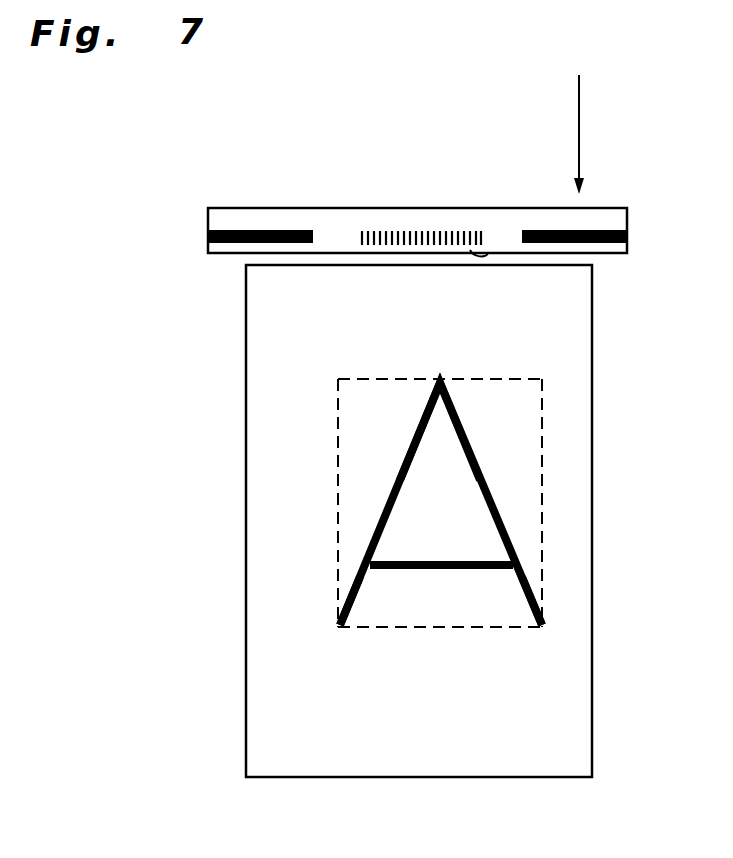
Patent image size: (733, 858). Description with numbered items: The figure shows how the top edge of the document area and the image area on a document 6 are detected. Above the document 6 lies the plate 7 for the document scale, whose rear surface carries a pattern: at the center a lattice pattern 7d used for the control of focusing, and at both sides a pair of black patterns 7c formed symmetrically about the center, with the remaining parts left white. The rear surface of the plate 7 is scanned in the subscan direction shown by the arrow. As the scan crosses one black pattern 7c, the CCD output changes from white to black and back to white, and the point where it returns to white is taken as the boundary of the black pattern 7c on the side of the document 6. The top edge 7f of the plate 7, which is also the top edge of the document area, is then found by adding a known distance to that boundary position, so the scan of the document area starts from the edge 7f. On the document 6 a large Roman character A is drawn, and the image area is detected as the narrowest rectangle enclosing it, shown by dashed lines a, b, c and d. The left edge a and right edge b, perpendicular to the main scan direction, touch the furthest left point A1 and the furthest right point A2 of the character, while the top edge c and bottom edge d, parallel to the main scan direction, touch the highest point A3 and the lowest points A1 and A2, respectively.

The document 6 is at (232, 357).
The plate 7 is at (299, 203).
The black patterns 7c is at (262, 232).
The lattice pattern 7d is at (410, 228).
The top edge of the plate 7f is at (470, 250).
The dashed line (left edge) a is at (330, 545).
The dashed line (right edge) b is at (556, 525).
The dashed line (top edge) c is at (492, 366).
The dashed line (bottom edge) d is at (455, 645).
The furthest left point of the character A A1 is at (338, 630).
The furthest right point of the character A A2 is at (542, 630).
The highest point of the character A A3 is at (440, 378).